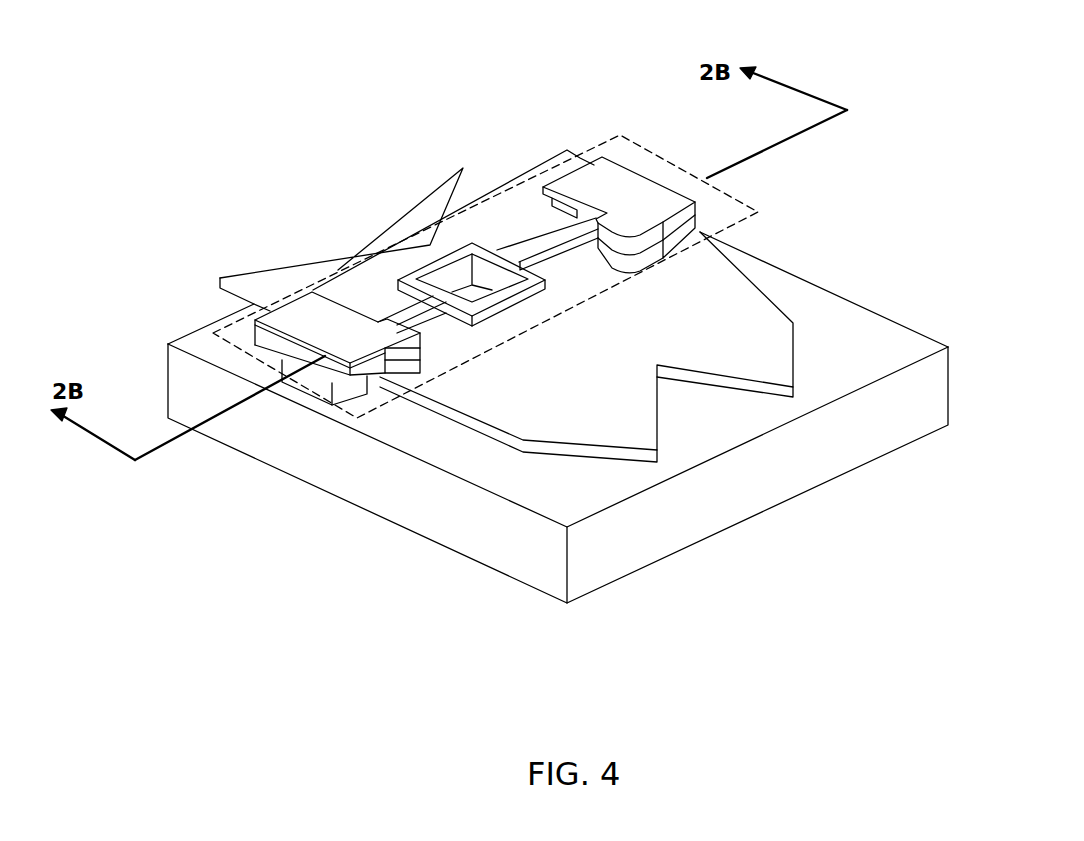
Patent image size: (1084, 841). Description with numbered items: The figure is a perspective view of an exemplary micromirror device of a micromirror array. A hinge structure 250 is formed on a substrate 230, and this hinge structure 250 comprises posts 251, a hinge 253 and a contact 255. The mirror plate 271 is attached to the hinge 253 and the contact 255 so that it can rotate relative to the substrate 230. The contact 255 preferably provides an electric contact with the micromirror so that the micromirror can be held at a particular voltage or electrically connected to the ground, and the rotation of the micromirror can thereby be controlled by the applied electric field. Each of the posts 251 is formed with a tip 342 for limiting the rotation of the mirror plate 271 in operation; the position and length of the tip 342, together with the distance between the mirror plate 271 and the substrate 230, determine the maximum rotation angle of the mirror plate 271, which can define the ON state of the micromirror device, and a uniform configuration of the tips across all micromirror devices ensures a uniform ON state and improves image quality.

The substrate 230 is at (723, 502).
The hinge structure 250 is at (737, 202).
The posts 251 is at (617, 181).
The hinge 253 is at (536, 257).
The contact 255 is at (465, 288).
The mirror plate 271 is at (758, 363).
The tip 342 is at (420, 350).